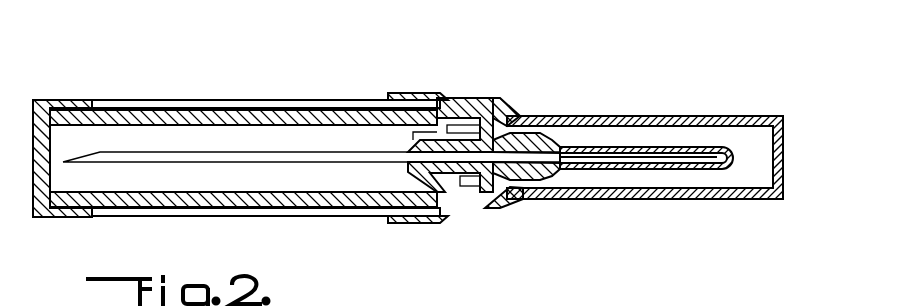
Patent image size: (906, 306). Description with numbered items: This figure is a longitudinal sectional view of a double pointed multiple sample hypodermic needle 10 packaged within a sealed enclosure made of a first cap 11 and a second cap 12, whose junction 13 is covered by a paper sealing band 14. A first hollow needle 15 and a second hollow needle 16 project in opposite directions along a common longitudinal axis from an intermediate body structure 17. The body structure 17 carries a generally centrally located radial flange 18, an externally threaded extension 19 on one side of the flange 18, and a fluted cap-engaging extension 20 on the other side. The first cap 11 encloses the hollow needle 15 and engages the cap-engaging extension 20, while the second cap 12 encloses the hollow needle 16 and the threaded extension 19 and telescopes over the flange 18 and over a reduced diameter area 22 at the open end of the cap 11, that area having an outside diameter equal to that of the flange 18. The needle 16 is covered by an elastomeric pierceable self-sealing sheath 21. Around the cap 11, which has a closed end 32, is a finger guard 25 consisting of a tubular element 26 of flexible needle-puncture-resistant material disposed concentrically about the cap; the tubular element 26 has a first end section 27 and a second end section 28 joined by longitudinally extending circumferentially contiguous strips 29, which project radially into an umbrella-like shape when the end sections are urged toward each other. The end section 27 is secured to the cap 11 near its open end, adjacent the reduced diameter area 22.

The double pointed multiple sample hypodermic needle 10 is at (385, 66).
The first cap 11 is at (143, 113).
The second cap 12 is at (608, 116).
The junction 13 is at (450, 97).
The paper sealing band 14 is at (425, 97).
The first hollow needle 15 is at (220, 152).
The second hollow needle 16 is at (680, 153).
The intermediate body structure 17 is at (457, 188).
The radial flange 18 is at (512, 108).
The externally threaded extension 19 is at (522, 204).
The cap-engaging extension 20 is at (417, 220).
The elastomeric pierceable self-sealing sheath 21 is at (709, 148).
The reduced diameter area 22 is at (462, 213).
The finger guard 25 is at (82, 100).
The tubular element 26 is at (273, 100).
The first end section 27 is at (405, 94).
The second end section 28 is at (60, 100).
The longitudinally extending strips 29 is at (183, 105).
The closed end 32 is at (33, 195).